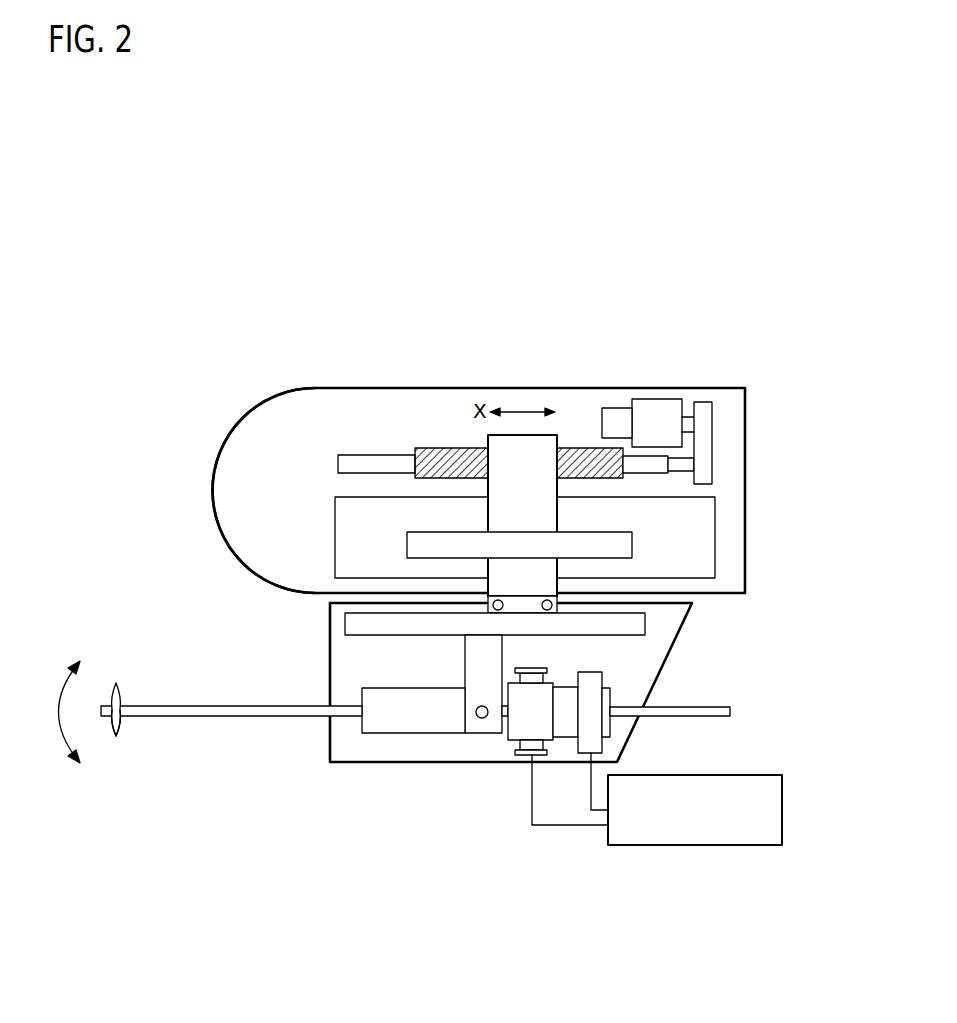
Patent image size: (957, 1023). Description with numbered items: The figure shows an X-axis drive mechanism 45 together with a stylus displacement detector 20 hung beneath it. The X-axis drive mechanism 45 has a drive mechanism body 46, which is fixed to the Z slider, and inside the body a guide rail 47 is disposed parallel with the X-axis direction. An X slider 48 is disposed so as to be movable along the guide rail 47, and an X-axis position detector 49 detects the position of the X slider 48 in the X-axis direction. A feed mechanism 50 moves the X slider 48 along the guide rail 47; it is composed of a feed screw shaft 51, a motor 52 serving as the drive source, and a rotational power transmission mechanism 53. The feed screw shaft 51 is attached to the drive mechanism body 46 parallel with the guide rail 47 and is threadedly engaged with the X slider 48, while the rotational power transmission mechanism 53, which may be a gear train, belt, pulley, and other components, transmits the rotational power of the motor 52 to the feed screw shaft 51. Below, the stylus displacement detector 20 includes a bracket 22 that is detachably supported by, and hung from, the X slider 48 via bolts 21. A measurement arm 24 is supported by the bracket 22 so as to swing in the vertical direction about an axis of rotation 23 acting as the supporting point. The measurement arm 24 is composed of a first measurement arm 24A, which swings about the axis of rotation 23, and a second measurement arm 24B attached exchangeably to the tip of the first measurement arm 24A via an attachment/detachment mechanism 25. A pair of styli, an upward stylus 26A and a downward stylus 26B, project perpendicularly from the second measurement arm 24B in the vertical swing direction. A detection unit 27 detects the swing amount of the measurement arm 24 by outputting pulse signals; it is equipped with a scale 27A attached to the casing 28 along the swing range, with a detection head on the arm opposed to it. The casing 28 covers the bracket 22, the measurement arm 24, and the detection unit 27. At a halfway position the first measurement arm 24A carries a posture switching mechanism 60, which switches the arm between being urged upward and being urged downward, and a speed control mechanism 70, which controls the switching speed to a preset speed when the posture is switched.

The stylus displacement detector 20 is at (330, 644).
The bolts 21 is at (547, 614).
The bracket 22 is at (645, 623).
The axis of rotation 23 is at (482, 720).
The measurement arm 24 is at (304, 799).
The first measurement arm 24A is at (475, 784).
The second measurement arm 24B is at (275, 717).
The attachment/detachment mechanism 25 is at (400, 734).
The upward stylus 26A is at (117, 683).
The downward stylus 26B is at (116, 737).
The detection unit 27 is at (649, 717).
The scale 27A is at (602, 745).
The casing 28 is at (656, 685).
The X-axis drive mechanism 45 is at (374, 388).
The drive mechanism body 46 is at (259, 402).
The guide rail 47 is at (335, 525).
The X slider 48 is at (557, 513).
The X-axis position detector 49 is at (407, 545).
The feed mechanism 50 is at (529, 393).
The feed screw shaft 51 is at (584, 447).
The motor 52 is at (653, 399).
The rotational power transmission mechanism 53 is at (707, 410).
The measurement arm posture switching mechanism 60 is at (516, 757).
The speed control mechanism 70 is at (694, 846).